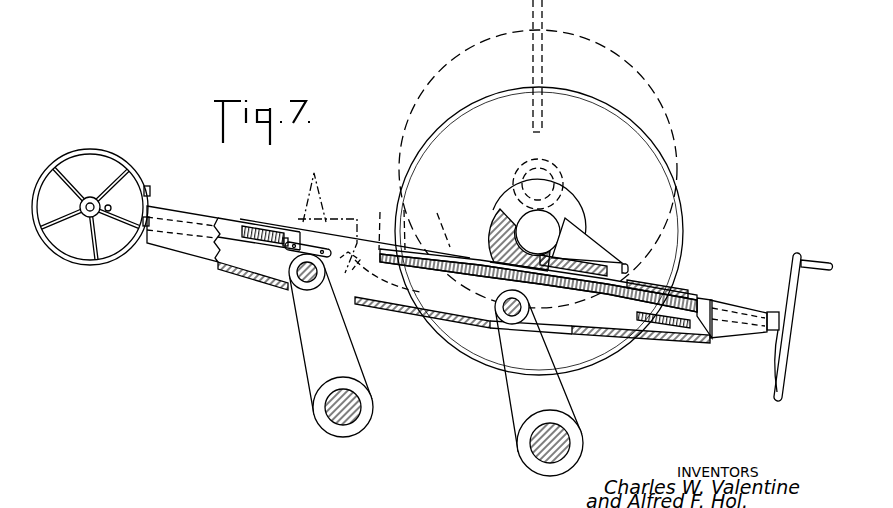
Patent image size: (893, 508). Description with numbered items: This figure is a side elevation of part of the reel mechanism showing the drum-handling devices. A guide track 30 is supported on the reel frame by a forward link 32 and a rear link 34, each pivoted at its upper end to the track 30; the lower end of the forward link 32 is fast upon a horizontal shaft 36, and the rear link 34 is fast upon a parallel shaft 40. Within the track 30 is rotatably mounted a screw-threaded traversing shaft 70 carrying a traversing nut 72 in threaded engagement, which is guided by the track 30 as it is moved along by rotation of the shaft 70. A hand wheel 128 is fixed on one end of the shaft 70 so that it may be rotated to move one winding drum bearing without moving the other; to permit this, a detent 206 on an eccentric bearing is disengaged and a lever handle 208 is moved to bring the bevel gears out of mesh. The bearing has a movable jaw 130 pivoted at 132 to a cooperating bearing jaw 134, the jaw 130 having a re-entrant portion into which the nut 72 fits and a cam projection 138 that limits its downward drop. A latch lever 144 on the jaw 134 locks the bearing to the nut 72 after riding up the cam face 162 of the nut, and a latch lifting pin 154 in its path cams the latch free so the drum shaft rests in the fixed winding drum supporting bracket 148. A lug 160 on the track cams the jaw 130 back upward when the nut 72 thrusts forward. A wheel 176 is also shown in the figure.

The guide track 30 is at (188, 252).
The forward link 32 is at (308, 313).
The rear link 34 is at (518, 377).
The horizontal shaft 36 is at (352, 402).
The shaft 40 is at (562, 435).
The screw-threaded traversing shaft 70 is at (257, 230).
The traversing nut 72 is at (448, 267).
The hand wheel 128 is at (777, 377).
The movable jaw 130 is at (378, 233).
The pivot 132 is at (330, 182).
The bearing jaw 134 is at (497, 225).
The cam projection 138 is at (363, 271).
The latch lever 144 is at (437, 240).
The winding drum supporting bracket 148 is at (593, 243).
The latch lifting pin 154 is at (660, 268).
The lug 160 is at (290, 255).
The cam face 162 is at (487, 253).
The grinding wheel 176 is at (650, 162).
The detent 206 is at (111, 207).
The lever handle 208 is at (86, 243).